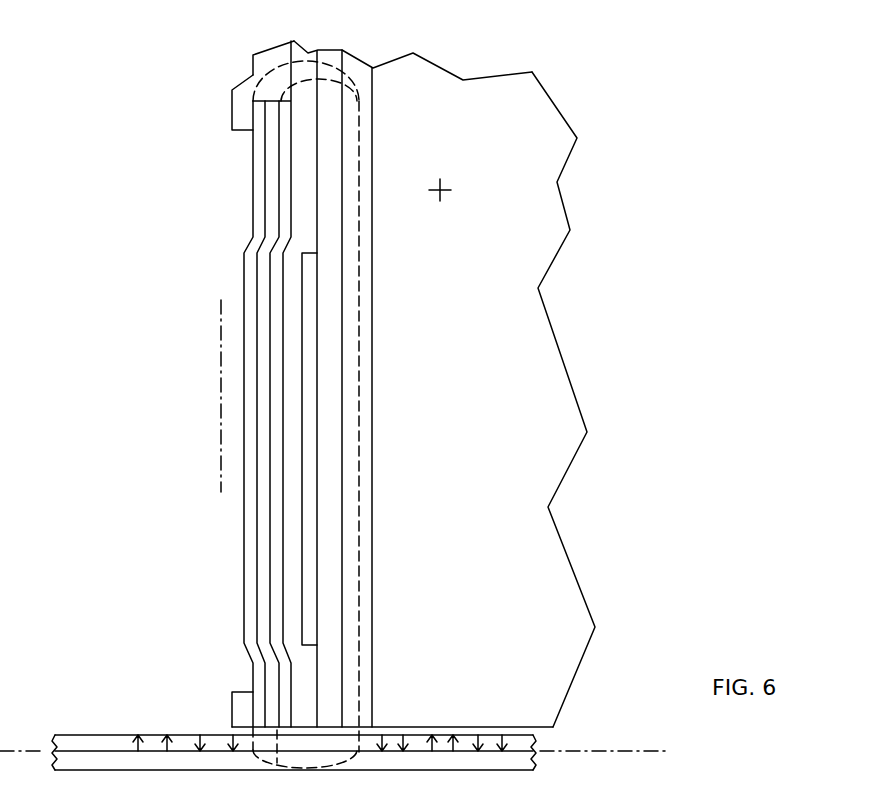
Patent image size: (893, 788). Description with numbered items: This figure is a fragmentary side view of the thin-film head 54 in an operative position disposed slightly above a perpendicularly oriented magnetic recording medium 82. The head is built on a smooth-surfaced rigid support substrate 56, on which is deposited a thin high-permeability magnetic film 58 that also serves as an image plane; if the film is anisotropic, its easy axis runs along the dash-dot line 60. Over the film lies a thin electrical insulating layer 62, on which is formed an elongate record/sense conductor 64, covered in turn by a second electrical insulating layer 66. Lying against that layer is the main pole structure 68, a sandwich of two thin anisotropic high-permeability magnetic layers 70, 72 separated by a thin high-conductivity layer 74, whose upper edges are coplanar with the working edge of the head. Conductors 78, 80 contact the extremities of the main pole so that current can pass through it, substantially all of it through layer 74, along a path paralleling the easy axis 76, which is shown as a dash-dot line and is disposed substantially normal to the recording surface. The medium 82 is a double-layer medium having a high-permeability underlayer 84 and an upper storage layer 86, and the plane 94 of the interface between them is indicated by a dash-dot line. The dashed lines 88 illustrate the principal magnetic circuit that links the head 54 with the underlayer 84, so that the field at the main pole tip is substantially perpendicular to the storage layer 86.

The head 54 is at (600, 115).
The rigid support substrate 56 is at (547, 203).
The magnetic film 58 is at (363, 107).
The dash-dot line 60 is at (447, 187).
The electrical insulating layer 62 is at (337, 50).
The elongate conductor 64 is at (310, 368).
The second electrical insulating layer 66 is at (298, 55).
The main pole structure 68 is at (197, 78).
The magnetic layer 70 is at (283, 148).
The magnetic layer 72 is at (262, 187).
The high-conductivity layer 74 is at (275, 215).
The easy axis 76 is at (218, 365).
The conductor 78 is at (240, 707).
The conductor 80 is at (240, 110).
The magnetic recording medium 82 is at (100, 723).
The high-permeability underlayer 84 is at (127, 760).
The upper storage layer 86 is at (78, 743).
The dashed lines 88 is at (358, 417).
The plane of the interface 94 is at (595, 748).